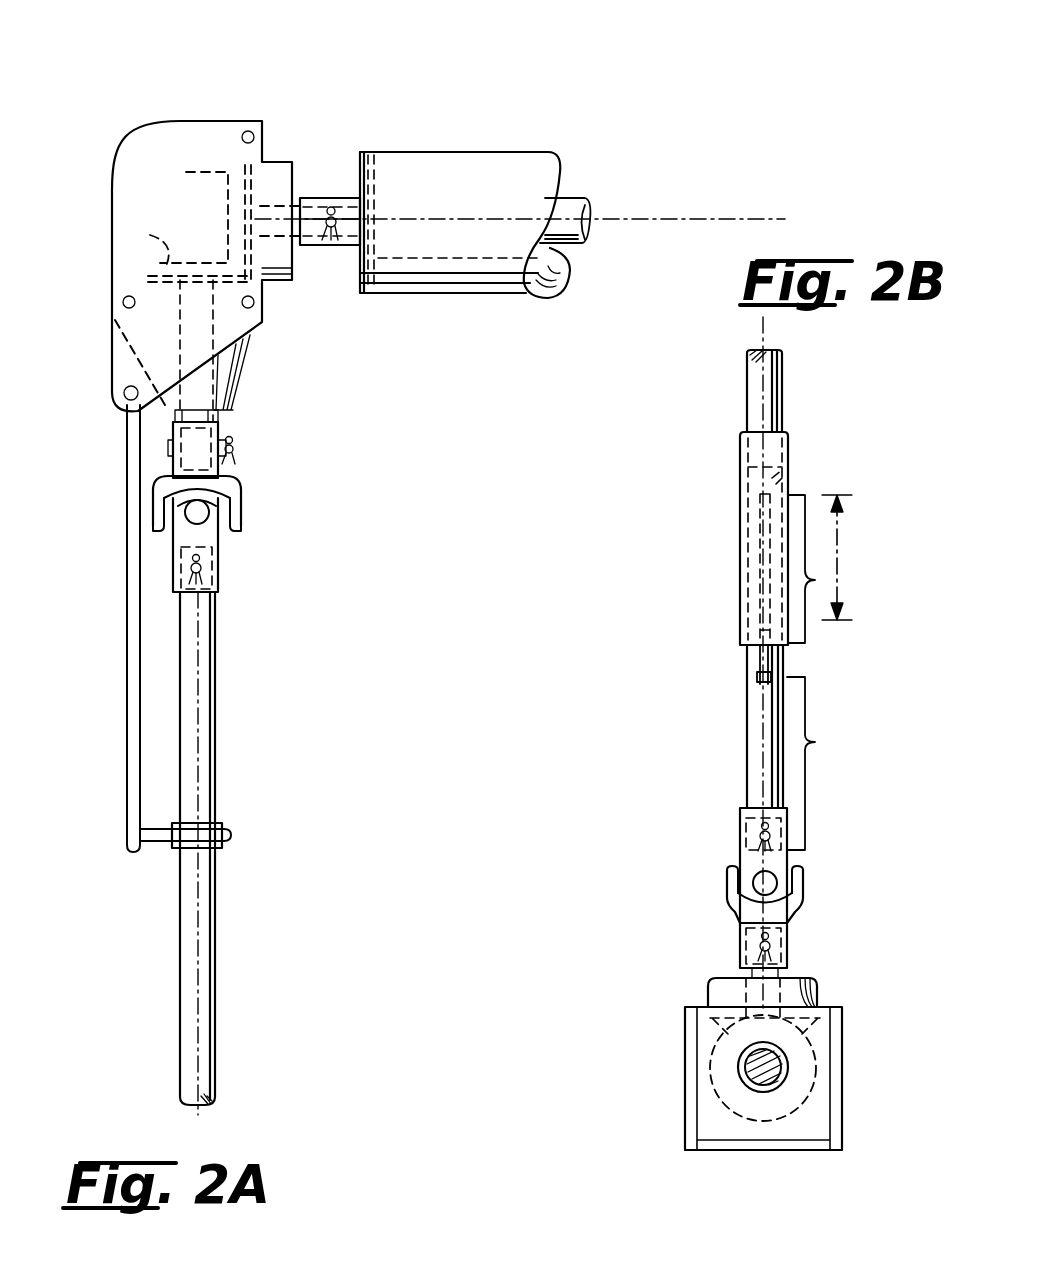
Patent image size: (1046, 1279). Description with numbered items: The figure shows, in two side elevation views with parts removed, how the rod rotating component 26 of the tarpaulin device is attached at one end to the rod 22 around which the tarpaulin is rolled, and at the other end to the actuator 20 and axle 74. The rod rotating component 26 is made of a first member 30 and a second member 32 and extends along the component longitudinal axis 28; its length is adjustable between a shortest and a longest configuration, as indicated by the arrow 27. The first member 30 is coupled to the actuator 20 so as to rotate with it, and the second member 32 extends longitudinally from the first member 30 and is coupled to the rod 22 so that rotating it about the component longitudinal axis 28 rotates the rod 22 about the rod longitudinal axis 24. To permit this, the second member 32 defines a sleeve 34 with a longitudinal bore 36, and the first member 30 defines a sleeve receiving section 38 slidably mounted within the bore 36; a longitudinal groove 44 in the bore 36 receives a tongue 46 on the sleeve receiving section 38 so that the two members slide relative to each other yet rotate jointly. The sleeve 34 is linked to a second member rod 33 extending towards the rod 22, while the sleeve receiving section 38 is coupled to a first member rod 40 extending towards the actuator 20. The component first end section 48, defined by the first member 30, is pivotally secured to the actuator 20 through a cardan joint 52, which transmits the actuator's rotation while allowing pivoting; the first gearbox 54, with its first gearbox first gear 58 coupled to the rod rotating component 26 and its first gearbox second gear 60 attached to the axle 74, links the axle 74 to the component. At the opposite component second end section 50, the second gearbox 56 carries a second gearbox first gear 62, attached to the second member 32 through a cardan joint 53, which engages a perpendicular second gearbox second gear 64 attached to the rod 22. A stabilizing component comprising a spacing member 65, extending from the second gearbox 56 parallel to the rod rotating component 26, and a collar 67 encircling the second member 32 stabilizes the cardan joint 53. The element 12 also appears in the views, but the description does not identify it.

In FIG. 2A, the motor 12 is at (483, 172).
In FIG. 2B, the actuator 20 is at (674, 1150).
In FIG. 2A, the rod 22 is at (318, 198).
In FIG. 2A, the rod longitudinal axis 24 is at (696, 218).
In FIG. 2A, the rod rotating component 26 is at (318, 884).
In FIG. 2B, the rod rotating component 26 is at (690, 606).
In FIG. 2B, the arrow 27 is at (845, 556).
In FIG. 2A, the component longitudinal axis 28 is at (200, 1108).
In FIG. 2B, the component longitudinal axis 28 is at (760, 330).
In FIG. 2B, the first member 30 is at (734, 759).
In FIG. 2A, the second member 32 is at (232, 694).
In FIG. 2B, the second member 32 is at (734, 414).
In FIG. 2B, the second member rod 33 is at (784, 392).
In FIG. 2B, the sleeve 34 is at (790, 453).
In FIG. 2B, the bore 36 is at (795, 470).
In FIG. 2B, the sleeve receiving section 38 is at (814, 646).
In FIG. 2B, the first member rod 40 is at (829, 763).
In FIG. 2B, the substantially longitudinal groove 44 is at (740, 519).
In FIG. 2B, the tongue 46 is at (766, 672).
In FIG. 2B, the component first end section 48 is at (730, 786).
In FIG. 2A, the component second end section 50 is at (236, 546).
In FIG. 2B, the cardan joint 52 is at (800, 900).
In FIG. 2A, the cardan joint 53 is at (246, 494).
In FIG. 2B, the first gearbox 54 is at (672, 1024).
In FIG. 2A, the second gearbox 56 is at (182, 89).
In FIG. 2B, the first gearbox first gear 58 is at (818, 986).
In FIG. 2B, the first gearbox second gear 60 is at (810, 1088).
In FIG. 2A, the second gearbox first gear 62 is at (178, 229).
In FIG. 2A, the second gearbox second gear 64 is at (223, 208).
In FIG. 2A, the spacing member 65 is at (128, 516).
In FIG. 2A, the collar 67 is at (223, 829).
In FIG. 2B, the axle 74 is at (748, 1074).